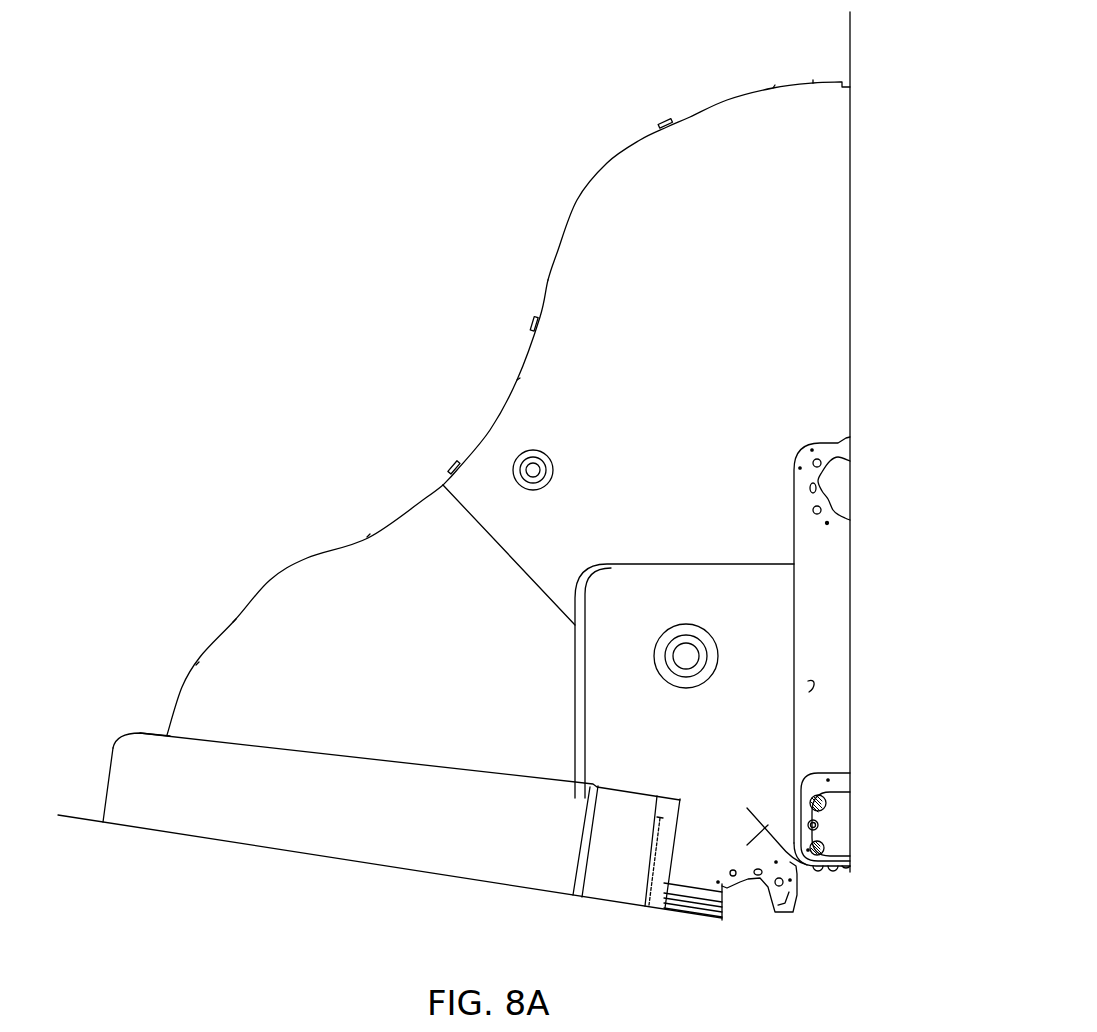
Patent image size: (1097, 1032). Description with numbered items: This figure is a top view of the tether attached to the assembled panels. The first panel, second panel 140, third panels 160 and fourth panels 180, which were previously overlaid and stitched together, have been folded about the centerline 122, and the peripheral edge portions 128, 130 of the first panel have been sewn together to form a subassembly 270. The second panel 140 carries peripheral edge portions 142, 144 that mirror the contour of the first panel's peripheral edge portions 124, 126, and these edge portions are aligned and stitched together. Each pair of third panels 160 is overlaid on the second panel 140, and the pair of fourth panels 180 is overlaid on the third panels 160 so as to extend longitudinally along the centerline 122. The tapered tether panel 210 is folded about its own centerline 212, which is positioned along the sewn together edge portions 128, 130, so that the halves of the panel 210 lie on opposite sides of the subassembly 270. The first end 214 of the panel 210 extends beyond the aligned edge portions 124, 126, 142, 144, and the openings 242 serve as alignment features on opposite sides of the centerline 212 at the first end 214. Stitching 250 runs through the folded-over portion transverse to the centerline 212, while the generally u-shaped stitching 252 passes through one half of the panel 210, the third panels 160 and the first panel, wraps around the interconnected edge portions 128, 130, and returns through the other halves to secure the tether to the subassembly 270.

The centerline 122 is at (851, 33).
The second panel 140 is at (851, 145).
The peripheral edge portion 124 is at (508, 369).
The peripheral edge portion 126 is at (508, 369).
The peripheral edge portion 142 is at (508, 369).
The peripheral edge portion 144 is at (645, 141).
The subassembly 270 is at (806, 64).
The fourth panel 180 is at (858, 547).
The third panel 160 is at (773, 641).
The panel 210 is at (101, 770).
The centerline 212 is at (80, 818).
The first end 214 is at (112, 838).
The opening 242 is at (141, 758).
The stitching 250 is at (572, 863).
The stitching 252 is at (645, 876).
The peripheral edge portion 128 is at (643, 925).
The peripheral edge portion 130 is at (710, 918).